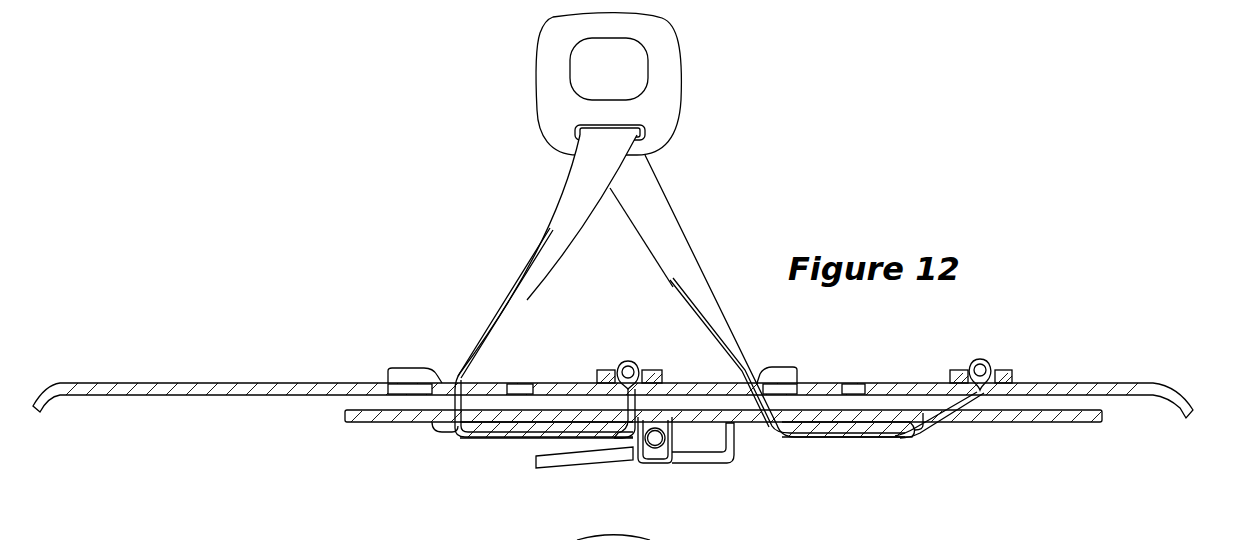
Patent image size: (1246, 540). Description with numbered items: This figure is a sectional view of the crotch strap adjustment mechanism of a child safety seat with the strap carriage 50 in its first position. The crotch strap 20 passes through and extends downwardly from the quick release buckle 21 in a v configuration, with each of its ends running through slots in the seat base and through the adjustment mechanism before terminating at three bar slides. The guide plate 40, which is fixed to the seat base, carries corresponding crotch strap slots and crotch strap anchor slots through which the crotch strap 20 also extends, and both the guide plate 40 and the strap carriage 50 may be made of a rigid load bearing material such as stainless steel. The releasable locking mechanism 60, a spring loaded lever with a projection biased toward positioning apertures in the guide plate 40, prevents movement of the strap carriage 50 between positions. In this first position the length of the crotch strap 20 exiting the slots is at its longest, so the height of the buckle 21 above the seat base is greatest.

The crotch strap 20 is at (652, 200).
The quick release buckle 21 is at (663, 50).
The guide plate 40 is at (1168, 383).
The strap carriage 50 is at (1053, 422).
The locking mechanism 60 is at (626, 478).